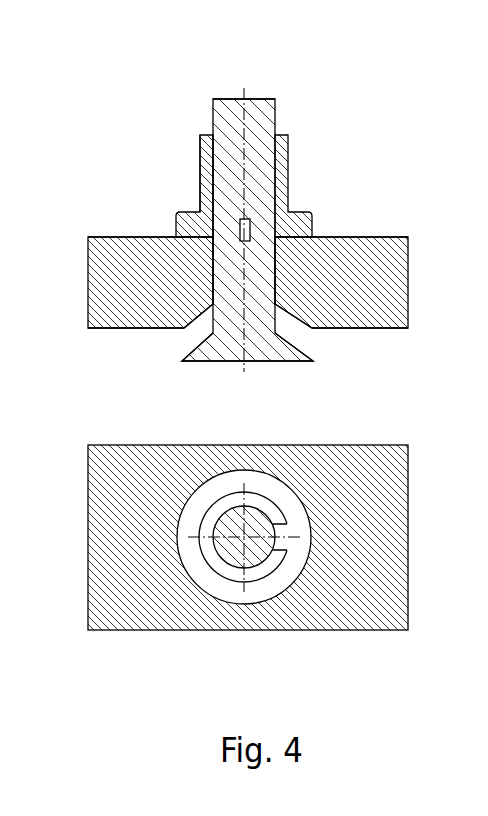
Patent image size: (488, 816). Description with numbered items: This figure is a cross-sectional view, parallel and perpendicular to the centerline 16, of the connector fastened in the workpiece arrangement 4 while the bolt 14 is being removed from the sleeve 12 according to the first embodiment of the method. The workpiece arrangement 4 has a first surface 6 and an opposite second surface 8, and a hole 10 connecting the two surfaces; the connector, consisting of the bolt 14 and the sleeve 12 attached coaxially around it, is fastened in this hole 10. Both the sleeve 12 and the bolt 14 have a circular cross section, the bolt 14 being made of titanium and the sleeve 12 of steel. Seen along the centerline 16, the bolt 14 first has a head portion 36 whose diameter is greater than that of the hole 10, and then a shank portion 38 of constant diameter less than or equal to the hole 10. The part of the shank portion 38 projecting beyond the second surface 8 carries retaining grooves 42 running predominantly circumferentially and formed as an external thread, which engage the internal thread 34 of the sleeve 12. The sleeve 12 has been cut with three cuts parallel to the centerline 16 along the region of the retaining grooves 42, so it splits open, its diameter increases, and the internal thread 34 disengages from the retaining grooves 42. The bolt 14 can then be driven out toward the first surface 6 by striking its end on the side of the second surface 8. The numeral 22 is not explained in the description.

The workpiece arrangement 4 is at (388, 250).
The first surface 6 is at (393, 329).
The second surface 8 is at (362, 237).
The hole 10 is at (213, 282).
The sleeve 12 is at (207, 134).
The bolt 14 is at (232, 104).
The centerline 16 is at (253, 97).
The chamfer 22 is at (313, 328).
The internal thread 34 is at (200, 151).
The head portion 36 is at (279, 358).
The shank portion 38 is at (266, 112).
The retaining grooves 42 is at (210, 181).